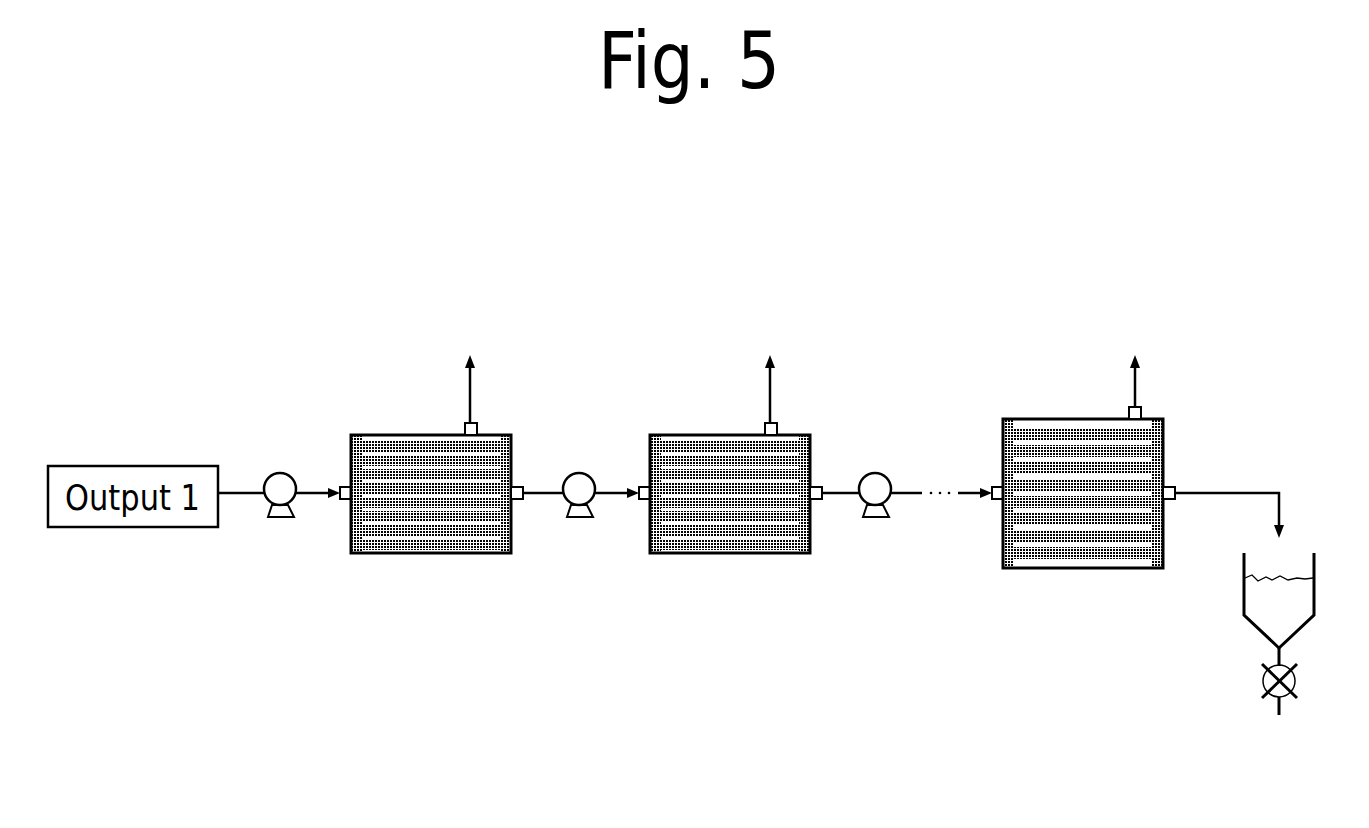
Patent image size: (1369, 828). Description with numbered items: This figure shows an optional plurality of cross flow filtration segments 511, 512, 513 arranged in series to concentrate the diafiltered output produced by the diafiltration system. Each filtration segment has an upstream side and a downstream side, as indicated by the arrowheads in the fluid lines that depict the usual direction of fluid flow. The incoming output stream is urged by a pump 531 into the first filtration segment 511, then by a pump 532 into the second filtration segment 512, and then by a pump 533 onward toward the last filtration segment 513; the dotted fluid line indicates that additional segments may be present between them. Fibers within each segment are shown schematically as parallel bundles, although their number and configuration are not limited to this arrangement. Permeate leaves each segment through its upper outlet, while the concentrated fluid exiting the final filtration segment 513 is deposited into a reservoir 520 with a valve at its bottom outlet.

The cross flow filtration segment 511 is at (378, 422).
The cross flow filtration segment 512 is at (678, 422).
The cross flow filtration segment 513 is at (1029, 407).
The reservoir 520 is at (1326, 535).
The pump 531 is at (281, 528).
The pump 532 is at (579, 528).
The pump 533 is at (876, 528).